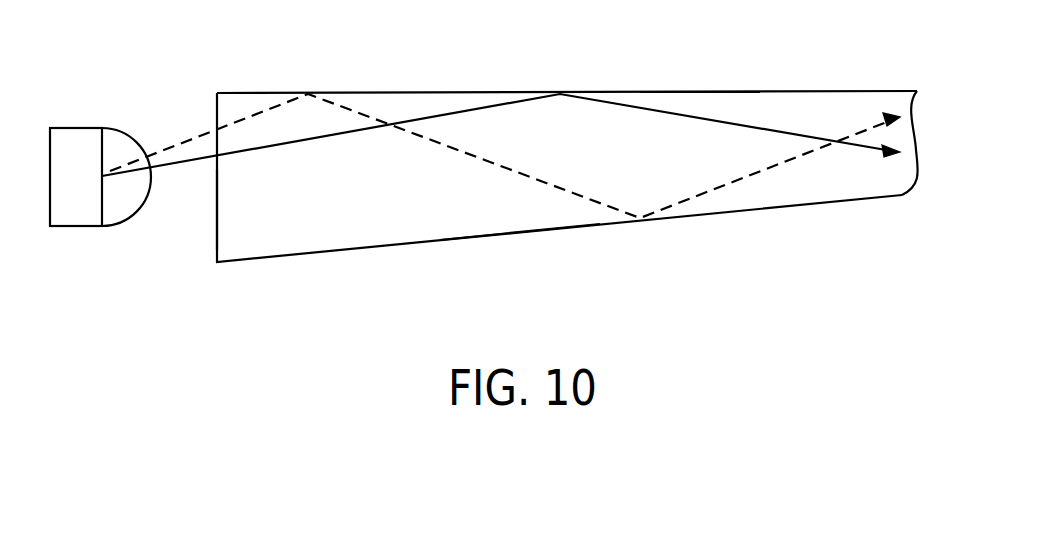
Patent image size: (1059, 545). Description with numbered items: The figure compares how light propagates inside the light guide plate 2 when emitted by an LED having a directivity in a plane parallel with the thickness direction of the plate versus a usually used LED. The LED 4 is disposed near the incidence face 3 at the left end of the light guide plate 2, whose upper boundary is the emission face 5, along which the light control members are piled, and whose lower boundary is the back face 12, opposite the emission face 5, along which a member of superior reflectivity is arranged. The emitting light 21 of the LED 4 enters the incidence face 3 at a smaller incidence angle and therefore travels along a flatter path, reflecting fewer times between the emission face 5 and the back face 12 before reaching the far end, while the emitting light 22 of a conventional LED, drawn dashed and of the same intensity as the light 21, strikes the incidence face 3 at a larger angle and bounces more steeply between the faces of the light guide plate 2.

The light guide plate 2 is at (811, 91).
The incidence face 3 is at (217, 213).
The LED 4 is at (80, 140).
The emission face 5 is at (705, 91).
The back face 12 is at (516, 234).
The emitting light 21 is at (428, 116).
The emitting light 22 is at (262, 112).